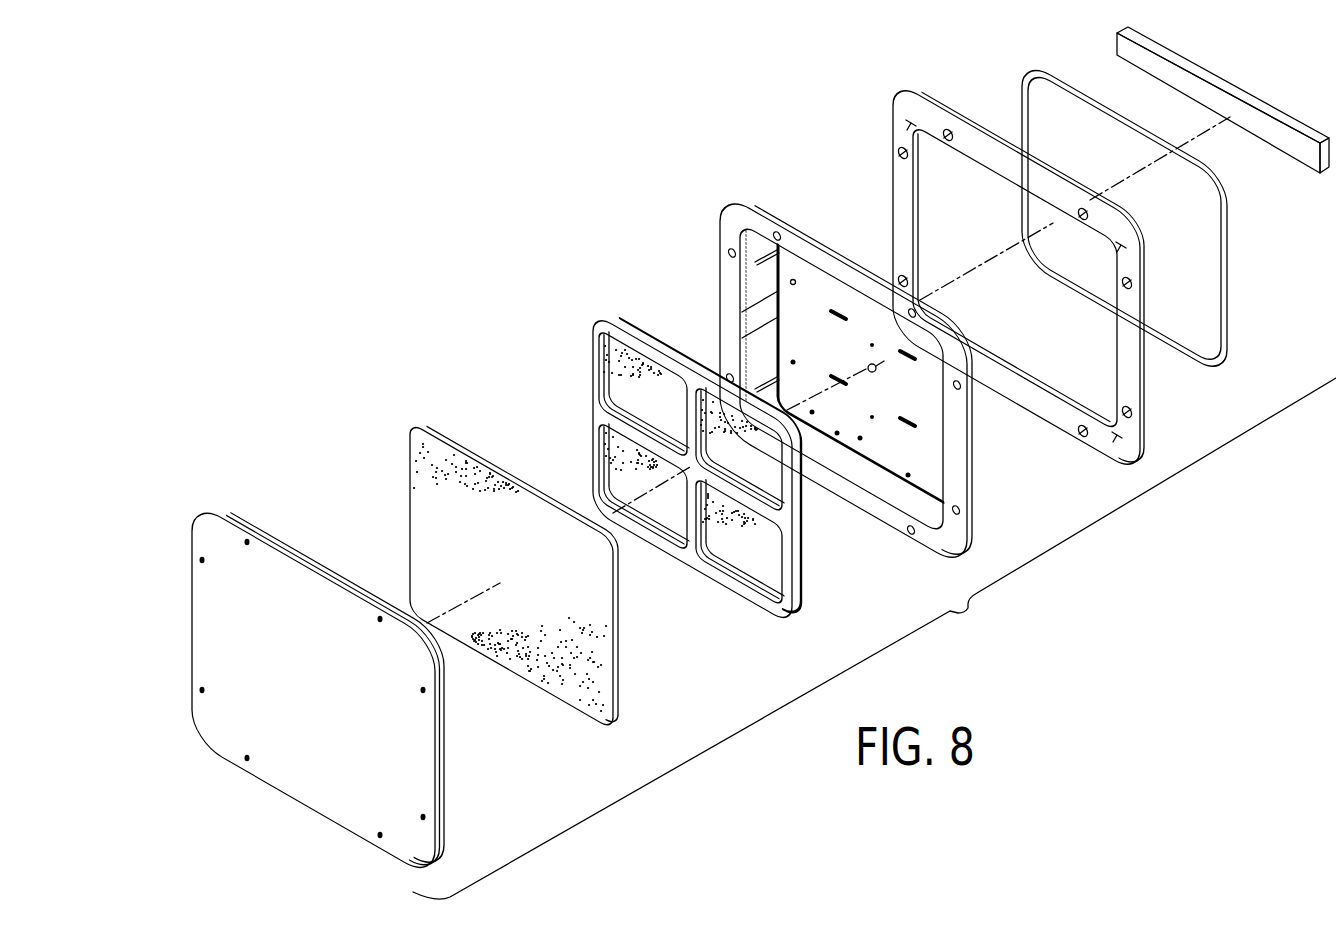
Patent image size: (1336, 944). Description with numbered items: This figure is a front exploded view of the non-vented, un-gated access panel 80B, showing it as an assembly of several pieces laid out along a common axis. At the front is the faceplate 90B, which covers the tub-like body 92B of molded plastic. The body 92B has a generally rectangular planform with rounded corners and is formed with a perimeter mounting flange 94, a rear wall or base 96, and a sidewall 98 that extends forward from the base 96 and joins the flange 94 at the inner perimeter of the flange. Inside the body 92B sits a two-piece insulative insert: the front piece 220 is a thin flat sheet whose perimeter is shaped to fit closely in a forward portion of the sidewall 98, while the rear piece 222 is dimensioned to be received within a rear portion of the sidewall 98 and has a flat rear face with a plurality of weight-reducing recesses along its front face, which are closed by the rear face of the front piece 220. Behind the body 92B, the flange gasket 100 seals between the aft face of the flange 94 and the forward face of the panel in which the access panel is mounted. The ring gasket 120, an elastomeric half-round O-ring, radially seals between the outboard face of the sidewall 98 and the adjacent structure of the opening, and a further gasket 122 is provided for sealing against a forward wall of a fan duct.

The access panel 80B is at (874, 638).
The faceplate 90B is at (279, 601).
The front piece 220 is at (420, 392).
The rear piece 222 is at (604, 303).
The body 92B is at (802, 341).
The perimeter mounting flange 94 is at (725, 228).
The sidewall 98 is at (782, 286).
The rear wall 96 is at (890, 438).
The flange gasket 100 is at (940, 100).
The ring gasket 120 is at (1250, 275).
The gasket 122 is at (1225, 62).